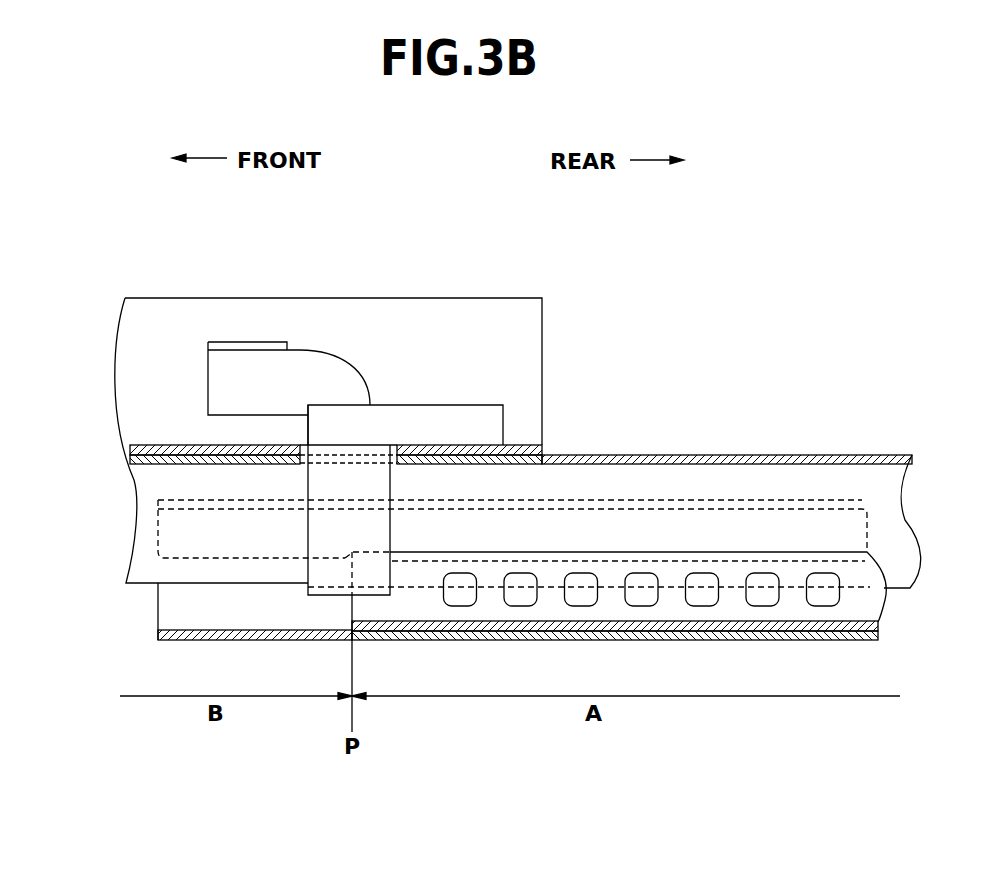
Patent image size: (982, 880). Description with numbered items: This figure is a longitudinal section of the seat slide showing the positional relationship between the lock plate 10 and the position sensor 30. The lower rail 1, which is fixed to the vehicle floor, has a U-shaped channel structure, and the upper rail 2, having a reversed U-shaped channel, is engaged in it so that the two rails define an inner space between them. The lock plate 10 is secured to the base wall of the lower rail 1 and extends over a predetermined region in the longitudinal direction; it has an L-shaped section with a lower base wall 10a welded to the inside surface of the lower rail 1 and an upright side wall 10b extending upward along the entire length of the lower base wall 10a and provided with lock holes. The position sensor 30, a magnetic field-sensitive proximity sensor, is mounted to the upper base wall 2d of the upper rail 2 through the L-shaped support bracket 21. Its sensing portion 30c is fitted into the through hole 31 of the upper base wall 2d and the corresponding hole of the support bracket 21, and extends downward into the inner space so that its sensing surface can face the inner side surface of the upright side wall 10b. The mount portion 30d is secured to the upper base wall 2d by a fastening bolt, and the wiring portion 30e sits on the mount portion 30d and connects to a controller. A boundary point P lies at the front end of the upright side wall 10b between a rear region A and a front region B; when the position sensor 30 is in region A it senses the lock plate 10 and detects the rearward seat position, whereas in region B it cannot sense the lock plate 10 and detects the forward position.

The lower rail 1 is at (177, 612).
The upper rail 2 is at (525, 450).
The upper base wall 2d is at (733, 455).
The lock plate 10 is at (565, 515).
The lower base wall 10a is at (876, 629).
The upright side wall 10b is at (548, 573).
The support bracket 21 is at (160, 298).
The position sensor 30 is at (338, 395).
The sensing portion 30c is at (363, 477).
The mount portion 30d is at (470, 428).
The wiring portion 30e is at (304, 368).
The through hole 31 is at (312, 458).